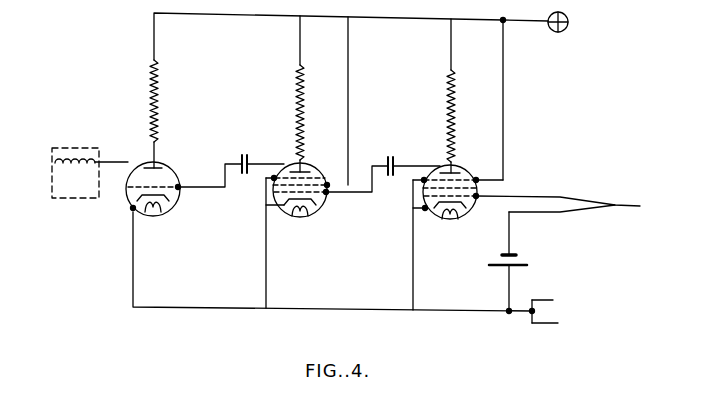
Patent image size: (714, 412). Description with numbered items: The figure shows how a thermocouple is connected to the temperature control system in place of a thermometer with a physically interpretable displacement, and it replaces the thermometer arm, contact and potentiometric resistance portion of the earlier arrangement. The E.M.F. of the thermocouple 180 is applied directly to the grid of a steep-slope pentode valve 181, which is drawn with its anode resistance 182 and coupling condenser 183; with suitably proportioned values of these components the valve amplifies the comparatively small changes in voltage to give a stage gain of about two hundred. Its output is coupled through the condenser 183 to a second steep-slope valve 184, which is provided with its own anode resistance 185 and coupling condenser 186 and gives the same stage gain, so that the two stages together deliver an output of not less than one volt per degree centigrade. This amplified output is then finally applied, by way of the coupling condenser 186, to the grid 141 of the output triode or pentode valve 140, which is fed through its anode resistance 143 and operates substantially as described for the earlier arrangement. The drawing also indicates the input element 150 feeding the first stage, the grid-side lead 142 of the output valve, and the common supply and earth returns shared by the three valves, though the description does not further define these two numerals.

The input coil / signal source 150 is at (90, 165).
The anode resistance 143 is at (170, 114).
The output triode (or pentode) valve 140 is at (170, 188).
The grid of first tube 142 is at (181, 184).
The grid 141 is at (176, 200).
The coupling condenser 186 is at (231, 161).
The anode resistance 185 is at (284, 118).
The second steep-slope valve 184 is at (305, 188).
The coupling condenser 183 is at (383, 166).
The anode resistance 182 is at (436, 121).
The steep-slope pentode valve 181 is at (458, 192).
The thermocouple 180 is at (568, 200).